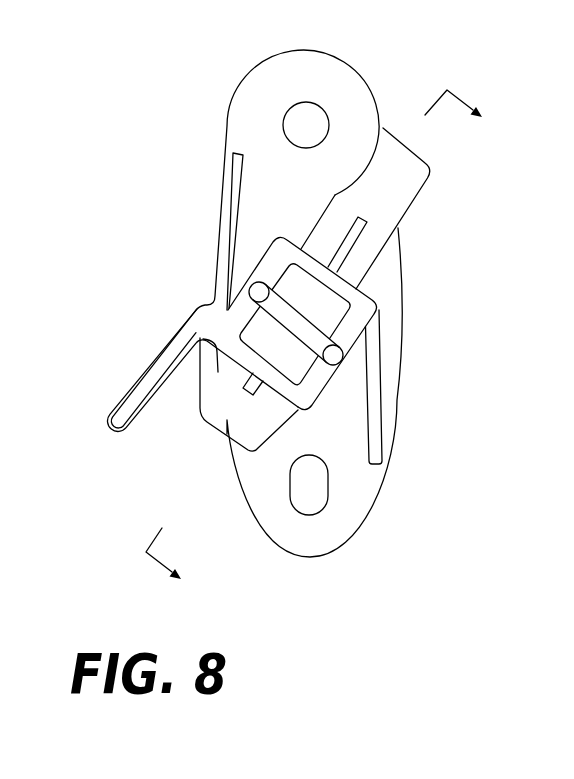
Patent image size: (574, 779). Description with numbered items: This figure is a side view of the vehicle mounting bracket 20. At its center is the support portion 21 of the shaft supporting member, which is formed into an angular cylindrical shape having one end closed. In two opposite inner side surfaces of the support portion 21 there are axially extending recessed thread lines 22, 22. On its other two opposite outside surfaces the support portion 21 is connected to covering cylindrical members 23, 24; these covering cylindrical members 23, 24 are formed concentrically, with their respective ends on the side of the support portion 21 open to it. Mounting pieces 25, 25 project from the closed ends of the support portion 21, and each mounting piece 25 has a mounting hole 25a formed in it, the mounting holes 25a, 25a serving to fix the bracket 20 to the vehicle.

The vehicle mounting bracket 20 is at (258, 86).
The support portion 21 is at (364, 326).
The recessed thread line 22 is at (258, 288).
The covering cylindrical member 23 is at (217, 415).
The covering cylindrical member 24 is at (416, 162).
The mounting piece 25 is at (368, 90).
The mounting hole 25a is at (305, 105).